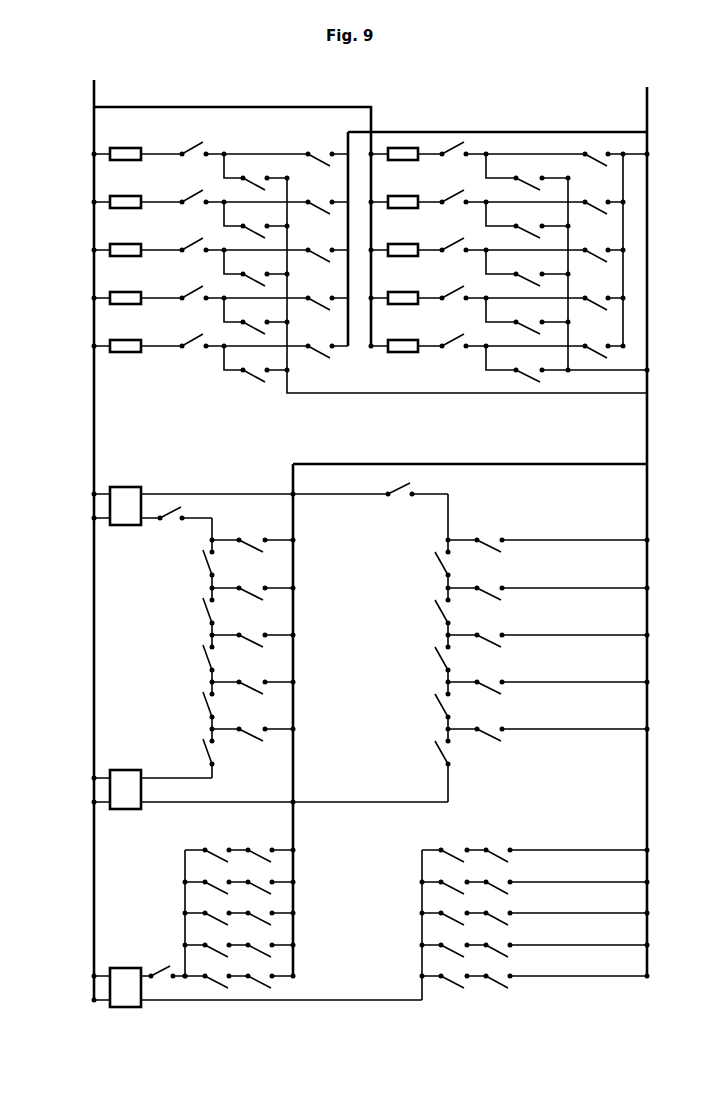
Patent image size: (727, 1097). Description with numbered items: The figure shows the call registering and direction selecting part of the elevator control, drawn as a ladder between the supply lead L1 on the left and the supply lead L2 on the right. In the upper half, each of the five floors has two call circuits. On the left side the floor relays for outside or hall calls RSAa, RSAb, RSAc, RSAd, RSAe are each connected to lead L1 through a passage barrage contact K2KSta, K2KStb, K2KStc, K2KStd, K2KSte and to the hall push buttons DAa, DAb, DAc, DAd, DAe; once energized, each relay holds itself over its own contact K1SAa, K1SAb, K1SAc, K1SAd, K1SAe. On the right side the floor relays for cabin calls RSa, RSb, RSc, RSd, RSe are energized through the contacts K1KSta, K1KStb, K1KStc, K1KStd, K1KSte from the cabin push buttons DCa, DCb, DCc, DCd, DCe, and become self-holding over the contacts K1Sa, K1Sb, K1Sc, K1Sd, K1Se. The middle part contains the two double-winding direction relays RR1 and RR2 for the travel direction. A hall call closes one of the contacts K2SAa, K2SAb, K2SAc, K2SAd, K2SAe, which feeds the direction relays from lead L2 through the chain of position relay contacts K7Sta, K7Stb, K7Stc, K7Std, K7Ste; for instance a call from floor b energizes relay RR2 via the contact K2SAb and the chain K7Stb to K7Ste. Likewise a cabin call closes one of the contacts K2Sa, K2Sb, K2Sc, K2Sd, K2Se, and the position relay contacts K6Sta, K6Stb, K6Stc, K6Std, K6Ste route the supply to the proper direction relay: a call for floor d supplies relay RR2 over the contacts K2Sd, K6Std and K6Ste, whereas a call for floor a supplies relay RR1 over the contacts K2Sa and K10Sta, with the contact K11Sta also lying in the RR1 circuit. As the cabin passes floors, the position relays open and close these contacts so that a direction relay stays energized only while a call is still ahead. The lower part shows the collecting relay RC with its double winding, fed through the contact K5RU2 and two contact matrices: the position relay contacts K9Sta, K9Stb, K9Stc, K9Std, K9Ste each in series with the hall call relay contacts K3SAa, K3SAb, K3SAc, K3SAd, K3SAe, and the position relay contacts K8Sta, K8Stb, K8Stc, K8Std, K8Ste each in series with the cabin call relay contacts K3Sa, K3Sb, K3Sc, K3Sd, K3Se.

The lead L1 is at (91, 95).
The lead L2 is at (493, 132).
The floor relay for outside or hall calls RSAa is at (109, 154).
The floor relay for outside or hall calls RSAb is at (109, 202).
The floor relay for outside or hall calls RSAc is at (109, 250).
The floor relay for outside or hall calls RSAd is at (109, 298).
The floor relay for outside or hall calls RSAe is at (109, 346).
The contact of auxiliary relay RKSta K2KSta is at (185, 142).
The contact of auxiliary relay RKStb K2KStb is at (185, 190).
The contact of auxiliary relay RKStc K2KStc is at (185, 238).
The contact of auxiliary relay RKStd K2KStd is at (185, 286).
The contact of auxiliary relay RKSte K2KSte is at (185, 334).
The contact of floor relay RSAa K1SAa is at (256, 171).
The contact of floor relay RSAb K1SAb is at (256, 219).
The contact of floor relay RSAc K1SAc is at (256, 267).
The contact of floor relay RSAd K1SAd is at (256, 315).
The contact of floor relay RSAe K1SAe is at (256, 363).
The push button on the floor DAa is at (286, 150).
The push button on the floor DAb is at (286, 198).
The push button on the floor DAc is at (286, 246).
The push button on the floor DAd is at (286, 294).
The push button on the floor DAe is at (286, 342).
The floor relay for cabin call RSa is at (406, 146).
The floor relay for cabin call RSb is at (406, 194).
The floor relay for cabin call RSc is at (406, 242).
The floor relay for cabin call RSd is at (406, 290).
The floor relay for cabin call RSe is at (406, 338).
The contact of auxiliary relay RKSta K1KSta is at (455, 158).
The contact of auxiliary relay RKStb K1KStb is at (455, 194).
The contact of auxiliary relay RKStc K1KStc is at (455, 242).
The contact of auxiliary relay RKStd K1KStd is at (455, 290).
The contact of auxiliary relay RKSte K1KSte is at (455, 338).
The contact of floor relay RSa K1Sa is at (527, 171).
The contact of floor relay RSb K1Sb is at (527, 219).
The contact of floor relay RSc K1Sc is at (527, 267).
The contact of floor relay RSd K1Sd is at (527, 315).
The contact of floor relay RSe K1Se is at (567, 363).
The push button in the cabin DCa is at (568, 150).
The push button in the cabin DCb is at (556, 198).
The push button in the cabin DCc is at (556, 246).
The push button in the cabin DCd is at (556, 294).
The push button in the cabin DCe is at (556, 342).
The direction relay RR1 is at (212, 506).
The direction relay RR2 is at (242, 789).
The collecting relay RC is at (229, 987).
The contact of position relay RSta K11Sta is at (184, 510).
The contact of position relay RSta K10Sta is at (382, 490).
The contact of relay RU2 K5RU2 is at (163, 973).
The contact of floor relay RSAa K2SAa is at (253, 535).
The contact of floor relay RSAb K2SAb is at (253, 583).
The contact of floor relay RSAc K2SAc is at (253, 630).
The contact of floor relay RSAd K2SAd is at (253, 677).
The contact of floor relay RSAe K2SAe is at (253, 724).
The contact of position relay RSta K7Sta is at (205, 559).
The contact of position relay RStb K7Stb is at (205, 607).
The contact of position relay RStc K7Stc is at (205, 654).
The contact of position relay RStd K7Std is at (205, 701).
The contact of position relay RSte K7Ste is at (205, 748).
The contact of floor relay RSa K2Sa is at (548, 535).
The contact of floor relay RSb K2Sb is at (548, 583).
The contact of floor relay RSc K2Sc is at (548, 630).
The contact of floor relay RSd K2Sd is at (548, 677).
The contact of floor relay RSe K2Se is at (548, 724).
The contact of position relay RSta K6Sta is at (438, 560).
The contact of position relay RStb K6Stb is at (438, 608).
The contact of position relay RStc K6Stc is at (438, 655).
The contact of position relay RStd K6Std is at (438, 702).
The contact of position relay RSte K6Ste is at (438, 749).
The contact of position relay RSta K9Sta is at (220, 842).
The contact of position relay RStb K9Stb is at (220, 874).
The contact of position relay RStc K9Stc is at (220, 905).
The contact of position relay RStd K9Std is at (220, 937).
The contact of position relay RSte K9Ste is at (220, 968).
The contact of floor relay RSAa K3SAa is at (284, 860).
The contact of floor relay RSAb K3SAb is at (284, 892).
The contact of floor relay RSAc K3SAc is at (284, 923).
The contact of floor relay RSAd K3SAd is at (284, 955).
The contact of floor relay RSAe K3SAe is at (284, 986).
The contact of position relay RSta K8Sta is at (454, 846).
The contact of position relay RStb K8Stb is at (453, 878).
The contact of position relay RStc K8Stc is at (453, 909).
The contact of position relay RStd K8Std is at (453, 941).
The contact of position relay RSte K8Ste is at (453, 972).
The contact of floor relay RSa K3Sa is at (492, 850).
The contact of floor relay RSb K3Sb is at (492, 882).
The contact of floor relay RSc K3Sc is at (492, 913).
The contact of floor relay RSd K3Sd is at (492, 945).
The contact of floor relay RSe K3Se is at (492, 976).